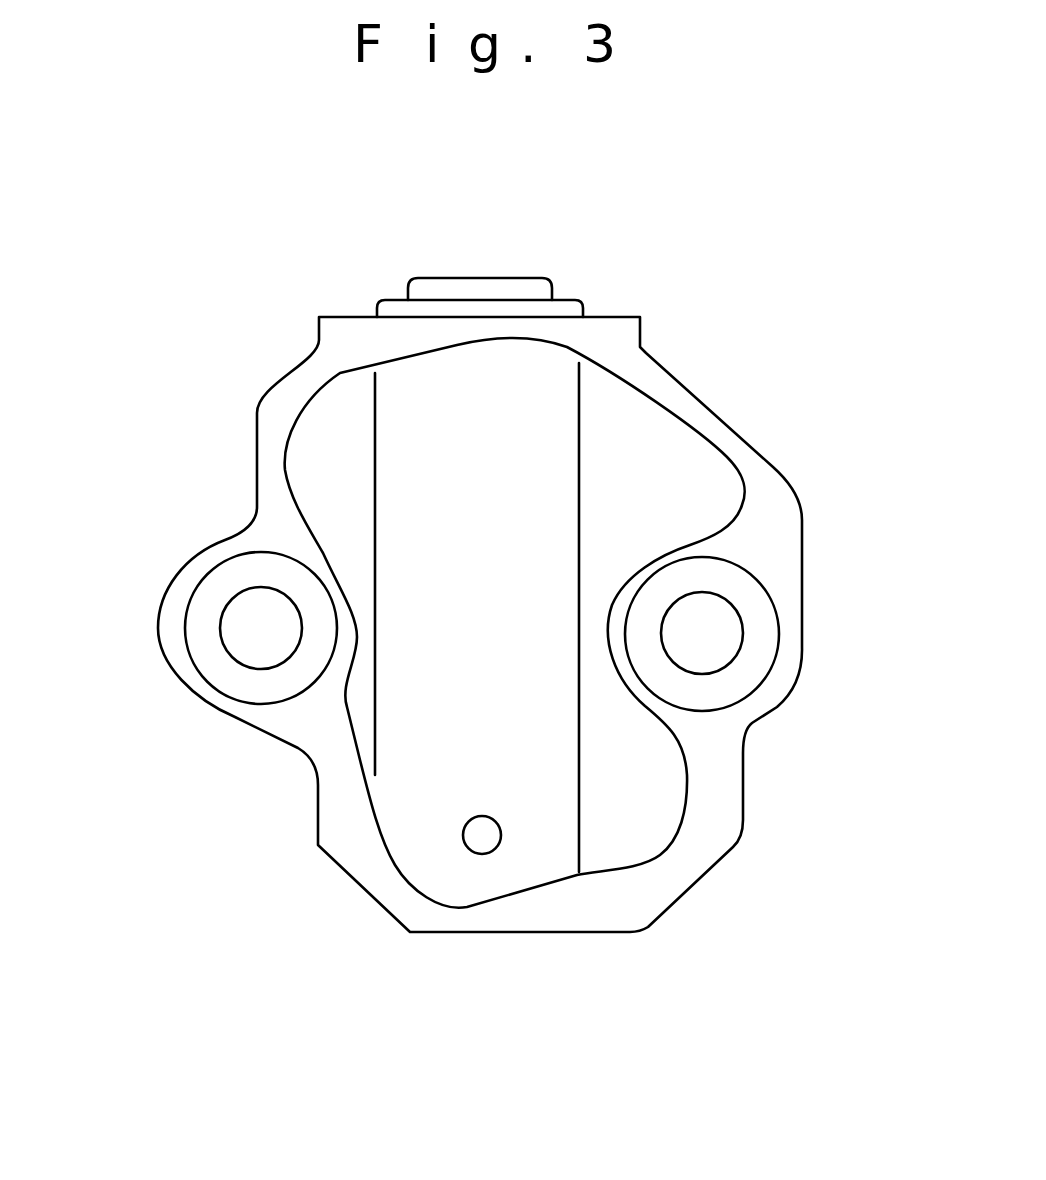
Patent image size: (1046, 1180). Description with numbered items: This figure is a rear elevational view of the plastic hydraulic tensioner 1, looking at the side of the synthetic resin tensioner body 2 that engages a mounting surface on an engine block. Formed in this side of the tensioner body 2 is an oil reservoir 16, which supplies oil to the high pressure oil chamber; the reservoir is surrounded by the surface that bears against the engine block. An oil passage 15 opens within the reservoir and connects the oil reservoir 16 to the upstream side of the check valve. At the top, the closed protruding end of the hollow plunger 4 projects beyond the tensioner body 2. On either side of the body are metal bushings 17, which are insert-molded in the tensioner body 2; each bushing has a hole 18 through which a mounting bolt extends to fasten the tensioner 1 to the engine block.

The plastic hydraulic tensioner 1 is at (688, 258).
The tensioner body 2 is at (780, 527).
The plunger 4 is at (470, 288).
The oil passage 15 is at (485, 855).
The oil reservoir 16 is at (700, 497).
The metal bushing 17 is at (202, 610).
The hole 18 is at (229, 654).